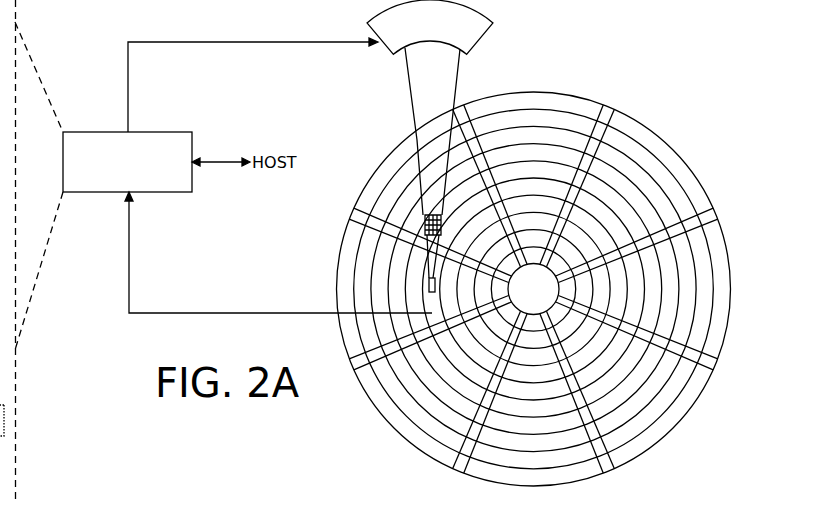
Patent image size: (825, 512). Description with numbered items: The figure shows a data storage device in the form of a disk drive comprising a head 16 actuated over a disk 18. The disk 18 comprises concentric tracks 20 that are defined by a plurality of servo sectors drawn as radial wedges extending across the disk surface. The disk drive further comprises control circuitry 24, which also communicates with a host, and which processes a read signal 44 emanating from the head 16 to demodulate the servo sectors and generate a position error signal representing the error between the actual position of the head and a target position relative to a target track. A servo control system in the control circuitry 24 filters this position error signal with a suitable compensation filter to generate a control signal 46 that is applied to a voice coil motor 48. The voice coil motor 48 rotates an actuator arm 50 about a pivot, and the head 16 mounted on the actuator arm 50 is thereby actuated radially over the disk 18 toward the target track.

The head 16 is at (420, 280).
The disk 18 is at (672, 135).
The tracks 20 is at (534, 118).
The control circuitry 24 is at (161, 132).
The read signal 44 is at (236, 313).
The control signal 46 is at (128, 76).
The voice coil motor 48 is at (385, 52).
The actuator arm 50 is at (418, 118).